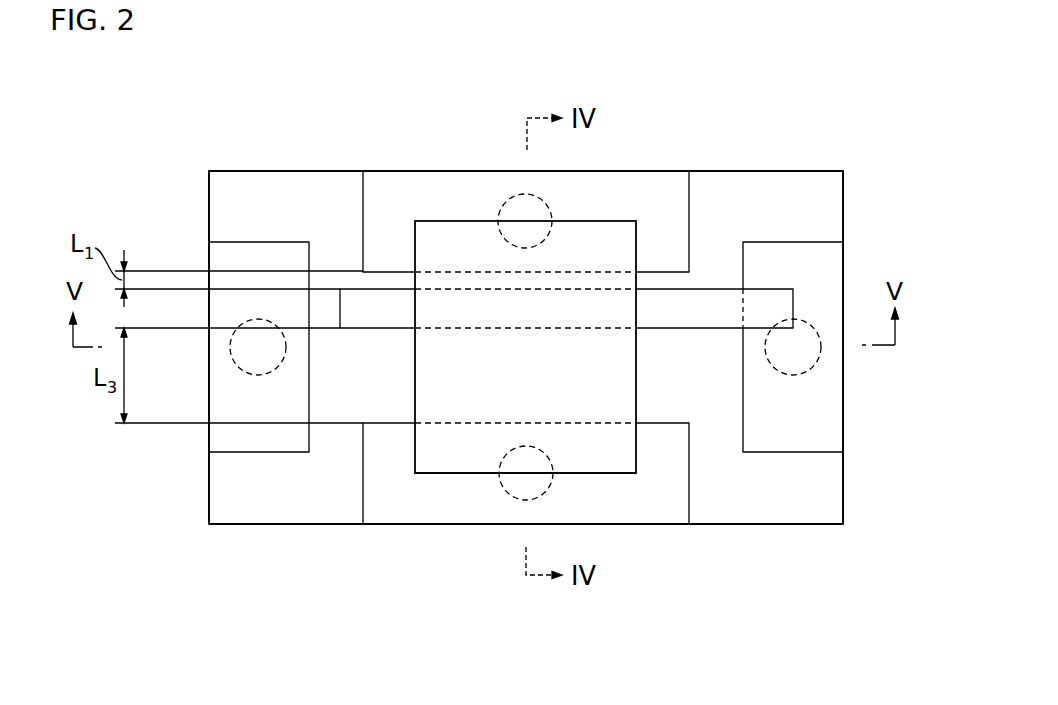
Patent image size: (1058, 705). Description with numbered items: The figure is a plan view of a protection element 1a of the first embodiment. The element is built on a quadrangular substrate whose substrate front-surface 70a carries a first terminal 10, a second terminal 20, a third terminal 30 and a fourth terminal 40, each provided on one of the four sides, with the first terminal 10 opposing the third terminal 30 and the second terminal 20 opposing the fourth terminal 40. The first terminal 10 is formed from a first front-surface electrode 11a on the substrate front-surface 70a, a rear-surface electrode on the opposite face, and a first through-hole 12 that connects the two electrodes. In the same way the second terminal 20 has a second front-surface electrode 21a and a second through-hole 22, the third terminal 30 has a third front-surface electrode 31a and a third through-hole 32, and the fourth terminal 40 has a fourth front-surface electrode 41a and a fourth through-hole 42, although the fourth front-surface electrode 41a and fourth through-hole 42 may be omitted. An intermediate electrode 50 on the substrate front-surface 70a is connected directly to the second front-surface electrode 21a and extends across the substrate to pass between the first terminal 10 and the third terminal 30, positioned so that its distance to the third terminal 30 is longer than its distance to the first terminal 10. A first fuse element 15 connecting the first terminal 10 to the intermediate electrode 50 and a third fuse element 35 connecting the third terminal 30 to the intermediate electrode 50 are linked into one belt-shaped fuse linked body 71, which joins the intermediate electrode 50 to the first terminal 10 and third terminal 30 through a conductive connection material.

The protection element 1a is at (826, 122).
The first terminal 10 is at (586, 177).
The first front-surface electrode 11a is at (452, 197).
The first through-hole 12 is at (507, 200).
The first fuse element 15 is at (433, 237).
The second terminal 20 is at (853, 347).
The second front-surface electrode 21a is at (830, 262).
The second through-hole 22 is at (793, 375).
The third terminal 30 is at (526, 523).
The third front-surface electrode 31a is at (662, 507).
The third through-hole 32 is at (533, 500).
The third fuse element 35 is at (425, 358).
The fourth terminal 40 is at (214, 347).
The fourth front-surface electrode 41a is at (218, 258).
The fourth through-hole 42 is at (232, 357).
The intermediate electrode 50 is at (715, 318).
The substrate front-surface 70a is at (830, 203).
The fuse linked body 71 is at (428, 488).